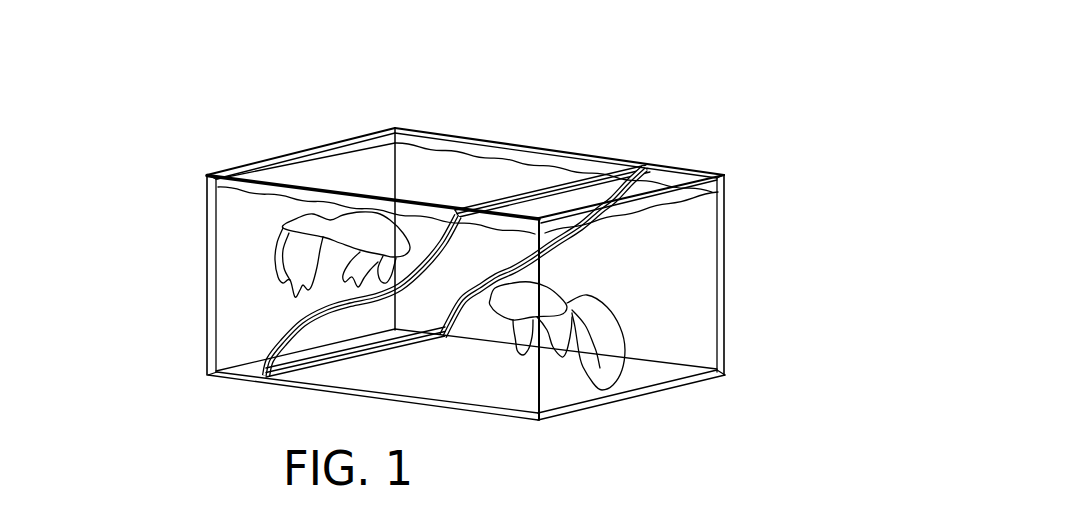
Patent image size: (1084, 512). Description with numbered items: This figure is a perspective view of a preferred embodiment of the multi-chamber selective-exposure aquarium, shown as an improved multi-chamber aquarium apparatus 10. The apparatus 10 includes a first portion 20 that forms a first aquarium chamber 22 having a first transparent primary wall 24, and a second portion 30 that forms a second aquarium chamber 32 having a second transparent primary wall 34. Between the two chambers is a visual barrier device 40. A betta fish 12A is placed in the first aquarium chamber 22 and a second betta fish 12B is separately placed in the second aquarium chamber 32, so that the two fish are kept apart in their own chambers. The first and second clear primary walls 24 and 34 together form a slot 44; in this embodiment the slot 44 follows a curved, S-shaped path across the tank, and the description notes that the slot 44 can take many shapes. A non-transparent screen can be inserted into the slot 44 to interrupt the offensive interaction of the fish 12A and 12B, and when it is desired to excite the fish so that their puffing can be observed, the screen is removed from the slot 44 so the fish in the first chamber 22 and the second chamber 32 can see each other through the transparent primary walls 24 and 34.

The multi-chamber aquarium apparatus 10 is at (512, 113).
The betta fish 12A is at (352, 237).
The betta fish 12B is at (527, 297).
The first portion 20 is at (247, 283).
The first aquarium chamber 22 is at (457, 170).
The first transparent primary wall 24 is at (396, 323).
The second portion 30 is at (647, 295).
The second aquarium chamber 32 is at (650, 181).
The second transparent primary wall 34 is at (393, 325).
The visual barrier device 40 is at (407, 273).
The slot 44 is at (267, 378).